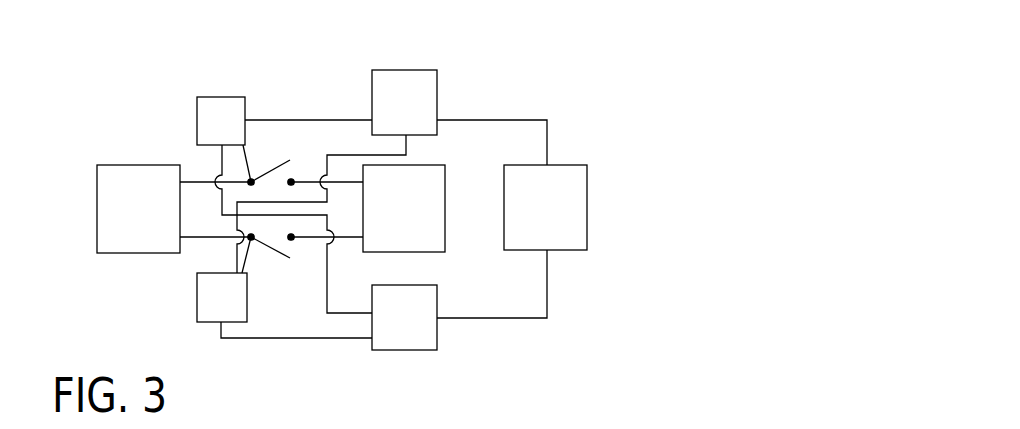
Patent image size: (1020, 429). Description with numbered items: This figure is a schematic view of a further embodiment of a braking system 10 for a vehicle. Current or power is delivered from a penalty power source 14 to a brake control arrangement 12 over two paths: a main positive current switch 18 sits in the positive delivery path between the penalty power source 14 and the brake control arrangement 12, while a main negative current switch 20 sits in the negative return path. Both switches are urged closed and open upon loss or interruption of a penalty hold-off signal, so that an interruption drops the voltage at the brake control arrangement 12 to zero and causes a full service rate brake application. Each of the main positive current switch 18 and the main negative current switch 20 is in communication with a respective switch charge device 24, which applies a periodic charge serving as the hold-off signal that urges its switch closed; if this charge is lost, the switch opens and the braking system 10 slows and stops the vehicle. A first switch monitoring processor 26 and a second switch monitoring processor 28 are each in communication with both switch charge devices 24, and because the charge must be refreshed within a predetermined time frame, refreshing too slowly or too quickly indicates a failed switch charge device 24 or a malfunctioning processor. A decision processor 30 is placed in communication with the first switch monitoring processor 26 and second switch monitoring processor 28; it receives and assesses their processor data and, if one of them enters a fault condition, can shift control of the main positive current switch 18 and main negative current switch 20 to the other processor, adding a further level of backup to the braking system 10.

The braking system 10 is at (165, 130).
The brake control arrangement 12 is at (421, 226).
The penalty power source 14 is at (156, 227).
The main positive current switch 18 is at (276, 156).
The main negative current switch 20 is at (274, 272).
The switch charge device 24 is at (238, 134).
The first switch monitoring processor 26 is at (614, 47).
The second switch monitoring processor 28 is at (437, 328).
The decision processor 30 is at (587, 220).